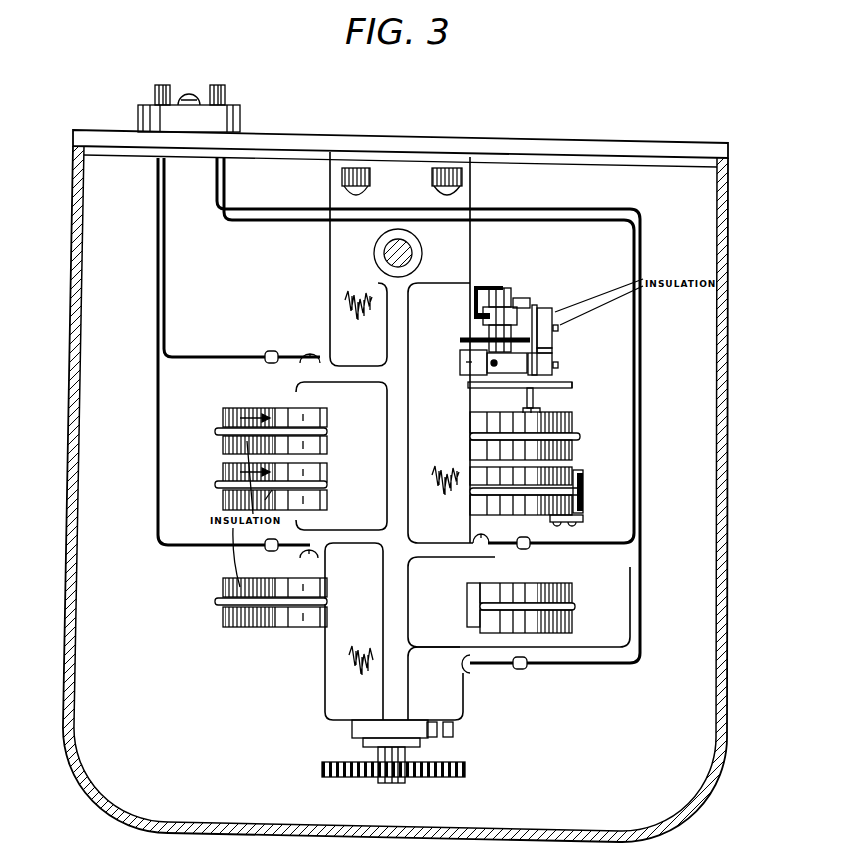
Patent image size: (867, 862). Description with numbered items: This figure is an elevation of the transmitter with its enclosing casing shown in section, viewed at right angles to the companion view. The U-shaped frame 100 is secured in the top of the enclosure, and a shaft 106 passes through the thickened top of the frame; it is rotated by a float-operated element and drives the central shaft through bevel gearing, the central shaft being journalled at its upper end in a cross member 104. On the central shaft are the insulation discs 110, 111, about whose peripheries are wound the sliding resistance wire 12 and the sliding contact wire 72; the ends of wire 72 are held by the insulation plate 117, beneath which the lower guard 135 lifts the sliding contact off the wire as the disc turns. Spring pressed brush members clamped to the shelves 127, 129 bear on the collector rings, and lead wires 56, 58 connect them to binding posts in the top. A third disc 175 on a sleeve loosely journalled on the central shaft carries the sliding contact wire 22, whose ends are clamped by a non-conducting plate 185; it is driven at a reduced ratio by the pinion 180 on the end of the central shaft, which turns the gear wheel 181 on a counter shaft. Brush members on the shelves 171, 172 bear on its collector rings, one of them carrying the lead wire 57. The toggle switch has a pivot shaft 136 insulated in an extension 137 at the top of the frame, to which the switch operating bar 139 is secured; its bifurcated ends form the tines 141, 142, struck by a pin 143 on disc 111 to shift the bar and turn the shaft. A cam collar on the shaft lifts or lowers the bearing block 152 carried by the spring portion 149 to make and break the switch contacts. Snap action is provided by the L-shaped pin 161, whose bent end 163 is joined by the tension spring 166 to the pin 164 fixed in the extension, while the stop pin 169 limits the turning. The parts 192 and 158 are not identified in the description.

The cover plate 192 is at (630, 148).
The U-shaped frame 100 is at (333, 296).
The shaft 106 is at (415, 252).
The lead wire 57 is at (597, 209).
The lead wire 58 is at (489, 220).
The lead wire 56 is at (200, 358).
The shelf 127 is at (305, 372).
The shelf 129 is at (293, 552).
The shelf 172 is at (497, 549).
The shelf 171 is at (500, 655).
The insulation disc 111 is at (223, 408).
The sliding contact wire 72 is at (218, 487).
The insulation disc 110 is at (223, 507).
The third disc 175 is at (220, 585).
The sliding contact wire 22 is at (217, 608).
The sliding resistance wire 12 is at (580, 437).
The insulation plate 117 is at (583, 487).
The lower guard 135 is at (583, 520).
The plate 185 is at (473, 597).
The bent end 163 is at (470, 283).
The L-shaped rod or pin 161 is at (474, 311).
The tension spring 166 is at (488, 285).
The pin 164 is at (510, 287).
The pivot rod or shaft 136 is at (510, 299).
The cross member 104 is at (532, 298).
The extension 137 is at (462, 339).
The stop pin 169 is at (530, 306).
The bearing block 152 is at (558, 328).
The insulating block 158 is at (560, 346).
The spring portion 149 is at (558, 363).
The tine 142 is at (556, 375).
The switch operating bar 139 is at (503, 390).
The pin 143 is at (572, 386).
The tine 141 is at (533, 390).
The pinion 180 is at (405, 782).
The gear wheel 181 is at (466, 777).